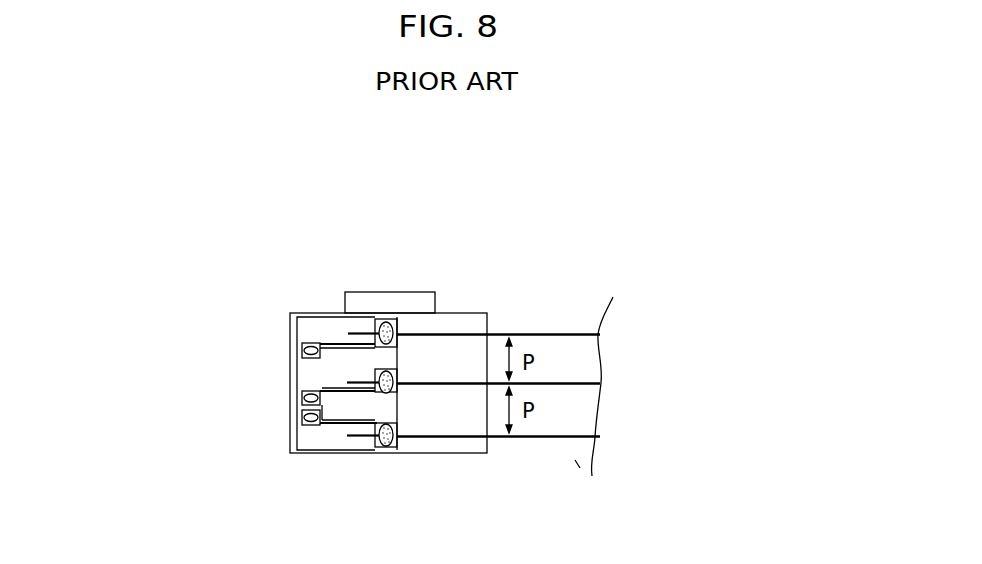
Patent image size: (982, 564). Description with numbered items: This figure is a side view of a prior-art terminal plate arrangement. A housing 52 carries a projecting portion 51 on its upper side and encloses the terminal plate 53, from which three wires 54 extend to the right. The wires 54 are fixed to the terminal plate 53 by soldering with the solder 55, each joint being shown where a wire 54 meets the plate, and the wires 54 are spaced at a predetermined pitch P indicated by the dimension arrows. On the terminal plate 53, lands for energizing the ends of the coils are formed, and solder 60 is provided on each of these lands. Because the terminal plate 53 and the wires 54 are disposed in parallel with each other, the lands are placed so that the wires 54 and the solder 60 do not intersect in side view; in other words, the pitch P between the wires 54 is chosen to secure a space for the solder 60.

The projection 51 is at (387, 291).
The housing 52 is at (448, 312).
The terminal plate 53 is at (330, 440).
The wires 54 is at (532, 333).
The solder 55 is at (398, 337).
The solder 60 is at (302, 417).